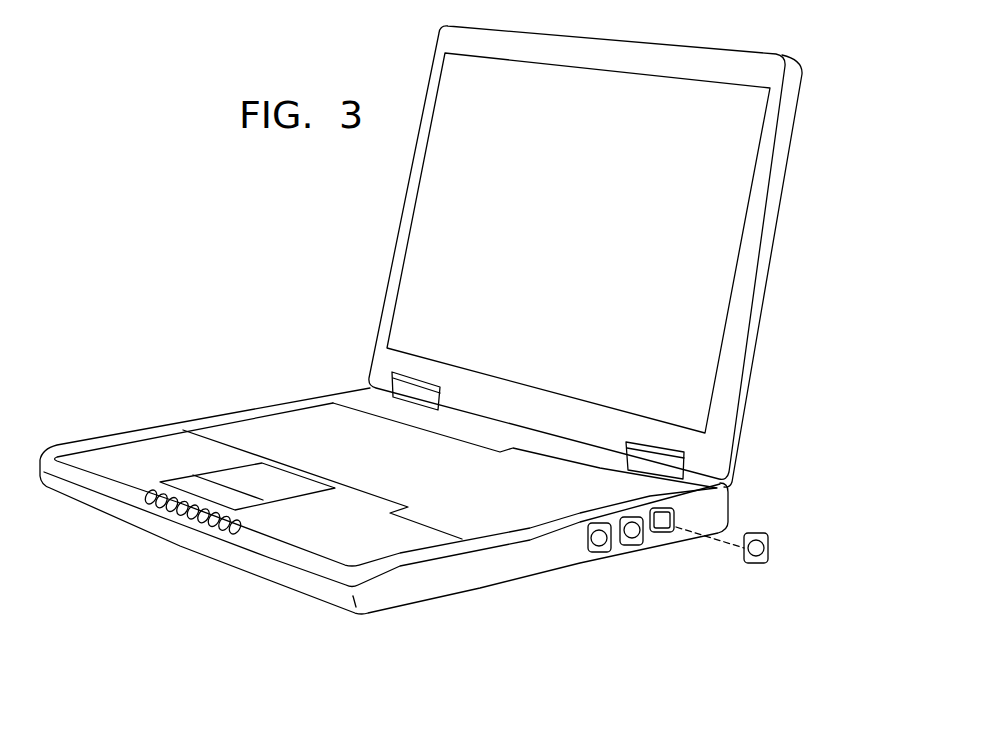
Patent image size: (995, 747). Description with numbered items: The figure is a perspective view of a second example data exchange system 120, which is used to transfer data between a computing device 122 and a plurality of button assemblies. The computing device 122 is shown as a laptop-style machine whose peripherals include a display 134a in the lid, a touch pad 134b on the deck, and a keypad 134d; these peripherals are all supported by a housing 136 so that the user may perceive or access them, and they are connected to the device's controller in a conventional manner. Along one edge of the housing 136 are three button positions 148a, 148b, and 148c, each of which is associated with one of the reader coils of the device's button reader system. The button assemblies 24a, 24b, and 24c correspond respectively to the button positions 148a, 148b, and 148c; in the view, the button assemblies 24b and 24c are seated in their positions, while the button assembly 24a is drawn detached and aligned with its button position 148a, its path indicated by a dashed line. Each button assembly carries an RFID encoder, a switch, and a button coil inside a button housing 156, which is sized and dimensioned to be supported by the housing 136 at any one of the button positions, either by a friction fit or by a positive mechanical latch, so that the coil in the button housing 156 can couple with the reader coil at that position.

The data exchange system 120 is at (789, 469).
The computing device 122 is at (381, 302).
The display 134a is at (443, 248).
The touch pad 134b is at (232, 477).
The keypad 134d is at (303, 437).
The housing 136 is at (460, 577).
The button position 148a is at (650, 508).
The button position 148b is at (620, 520).
The button position 148c is at (586, 542).
The button assembly 24a is at (760, 557).
The button assembly 24b is at (636, 545).
The button assembly 24c is at (602, 552).
The button housing 156 is at (588, 542).